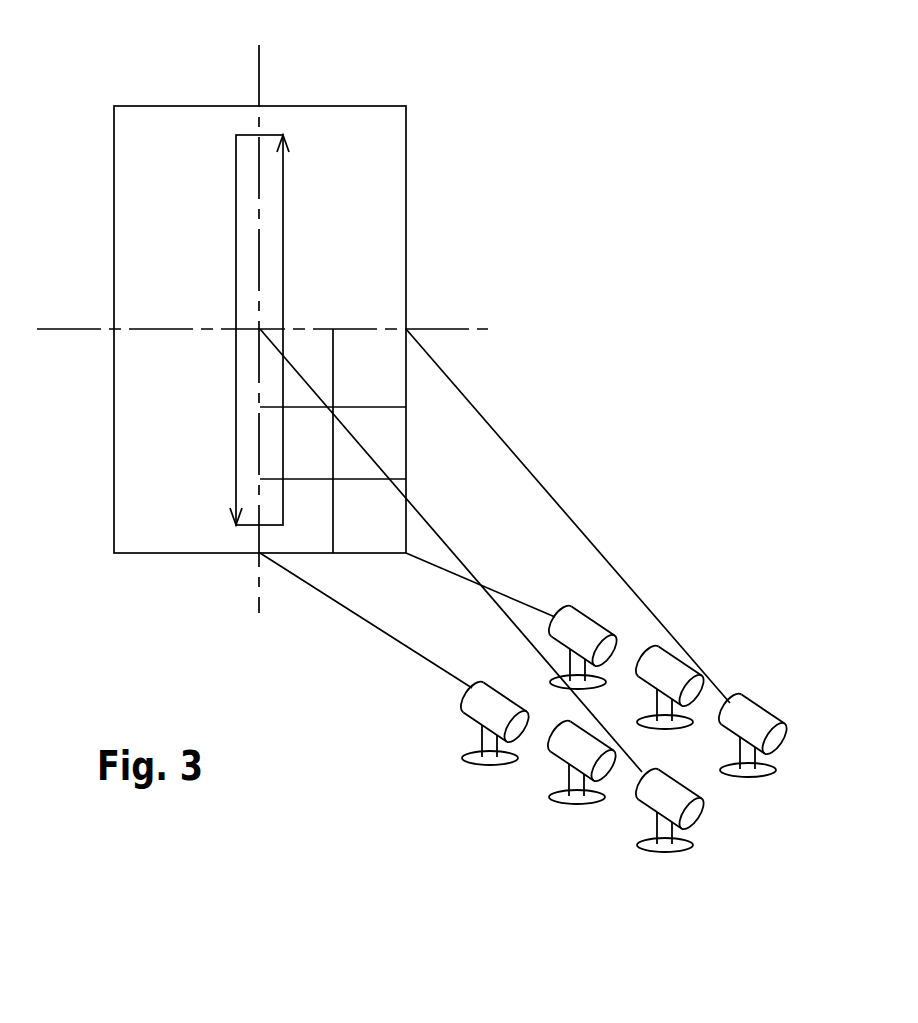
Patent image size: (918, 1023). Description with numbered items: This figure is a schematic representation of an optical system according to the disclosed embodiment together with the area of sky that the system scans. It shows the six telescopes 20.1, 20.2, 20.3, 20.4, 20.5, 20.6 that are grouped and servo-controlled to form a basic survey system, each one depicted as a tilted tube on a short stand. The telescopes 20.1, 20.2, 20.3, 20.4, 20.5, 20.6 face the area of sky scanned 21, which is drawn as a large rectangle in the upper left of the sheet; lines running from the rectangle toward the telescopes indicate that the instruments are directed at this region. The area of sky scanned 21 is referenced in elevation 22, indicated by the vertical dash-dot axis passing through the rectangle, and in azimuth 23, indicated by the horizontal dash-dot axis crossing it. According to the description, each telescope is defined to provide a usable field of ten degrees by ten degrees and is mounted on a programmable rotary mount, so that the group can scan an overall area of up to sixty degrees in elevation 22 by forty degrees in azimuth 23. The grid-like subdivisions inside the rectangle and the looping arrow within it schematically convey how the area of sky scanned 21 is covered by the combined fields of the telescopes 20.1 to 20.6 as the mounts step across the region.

The area of sky scanned 21 is at (114, 139).
The elevation 22 is at (259, 69).
The azimuth 23 is at (61, 327).
The telescope 20.1 is at (477, 703).
The telescope 20.2 is at (585, 623).
The telescope 20.3 is at (565, 748).
The telescope 20.4 is at (670, 662).
The telescope 20.5 is at (650, 797).
The telescope 20.6 is at (753, 713).